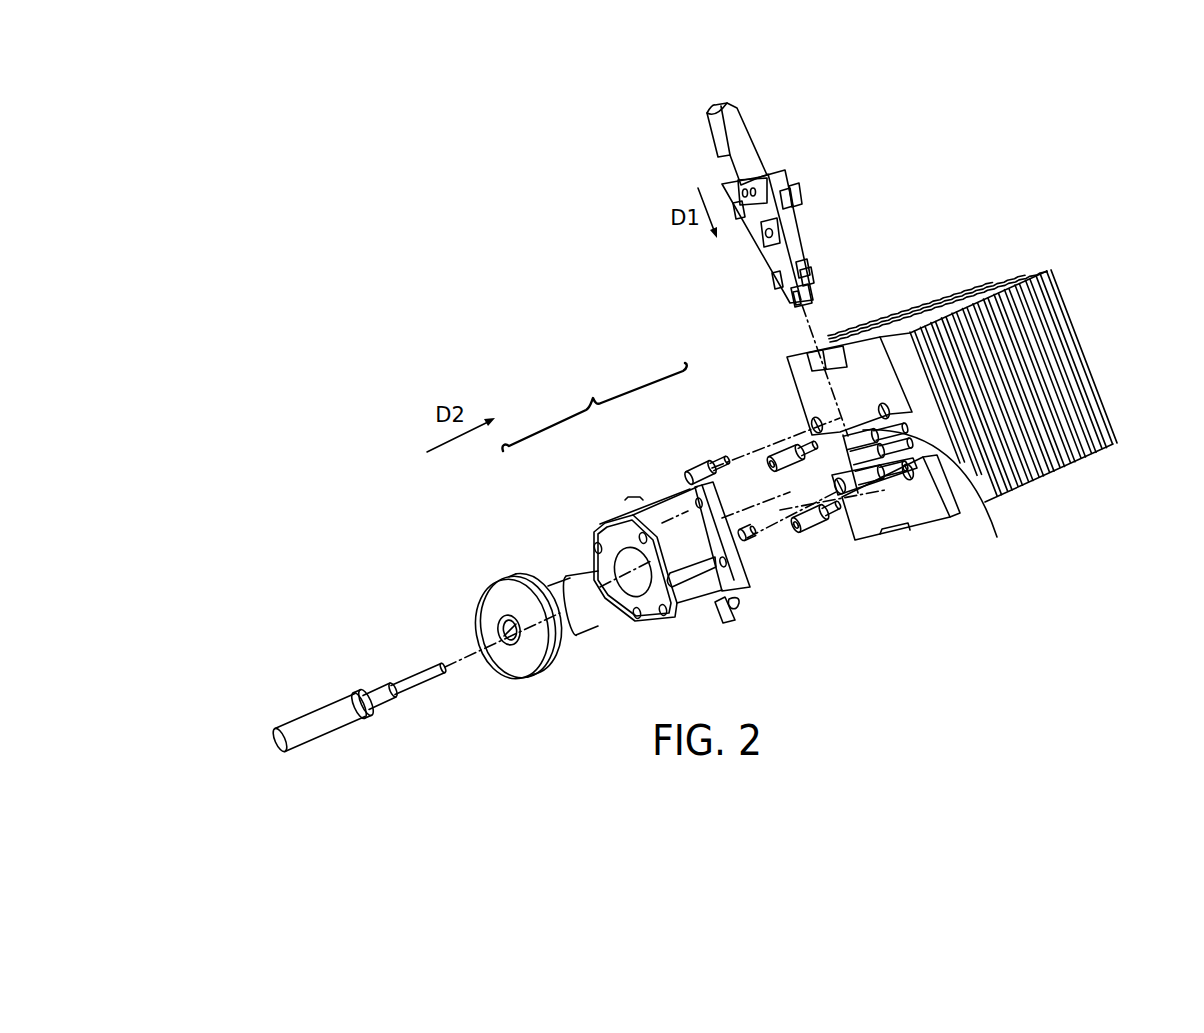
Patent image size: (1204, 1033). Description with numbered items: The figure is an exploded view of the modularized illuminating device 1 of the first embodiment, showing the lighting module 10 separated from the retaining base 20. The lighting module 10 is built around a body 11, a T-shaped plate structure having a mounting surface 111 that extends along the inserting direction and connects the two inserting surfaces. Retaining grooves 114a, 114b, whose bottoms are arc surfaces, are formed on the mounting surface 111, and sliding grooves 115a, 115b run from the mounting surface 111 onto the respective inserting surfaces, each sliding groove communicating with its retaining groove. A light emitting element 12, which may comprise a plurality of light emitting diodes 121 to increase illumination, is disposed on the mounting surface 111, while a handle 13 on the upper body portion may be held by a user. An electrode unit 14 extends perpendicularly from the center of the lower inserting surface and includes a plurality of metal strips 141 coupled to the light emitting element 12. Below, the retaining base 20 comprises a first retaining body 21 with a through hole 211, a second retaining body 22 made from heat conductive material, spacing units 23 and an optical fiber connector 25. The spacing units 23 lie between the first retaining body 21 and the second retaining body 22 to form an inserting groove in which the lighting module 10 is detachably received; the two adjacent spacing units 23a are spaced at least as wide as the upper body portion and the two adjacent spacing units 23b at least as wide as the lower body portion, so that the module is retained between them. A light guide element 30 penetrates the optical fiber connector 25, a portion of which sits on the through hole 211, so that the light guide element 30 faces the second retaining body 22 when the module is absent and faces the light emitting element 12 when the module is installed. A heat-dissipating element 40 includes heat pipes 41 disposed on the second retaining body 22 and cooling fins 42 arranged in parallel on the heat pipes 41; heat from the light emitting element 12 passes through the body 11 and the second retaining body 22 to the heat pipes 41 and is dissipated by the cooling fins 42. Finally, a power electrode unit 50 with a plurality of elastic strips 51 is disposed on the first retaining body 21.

The modularized illuminating device 1 is at (1096, 141).
The lighting module 10 is at (746, 233).
The body 11 is at (809, 222).
The mounting surface 111 is at (788, 246).
The retaining groove 114a is at (781, 197).
The retaining groove 114b is at (803, 273).
The sliding groove 115a is at (793, 203).
The sliding groove 115b is at (808, 284).
The light emitting element 12 is at (734, 260).
The light emitting diodes 121 is at (770, 238).
The handle 13 is at (718, 132).
The electrode unit 14 is at (763, 324).
The metal strips 141 is at (790, 298).
The retaining base 20 is at (594, 407).
The first retaining body 21 is at (642, 561).
The through hole 211 is at (635, 584).
The second retaining body 22 is at (780, 380).
The spacing units 23 is at (742, 505).
The spacing units 23a is at (706, 477).
The spacing units 23b is at (753, 549).
The optical fiber connector 25 is at (475, 574).
The light guide element 30 is at (360, 668).
The heat-dissipating element 40 is at (995, 418).
The heat pipes 41 is at (987, 505).
The cooling fins 42 is at (1080, 356).
The power electrode unit 50 is at (774, 648).
The elastic strips 51 is at (740, 607).